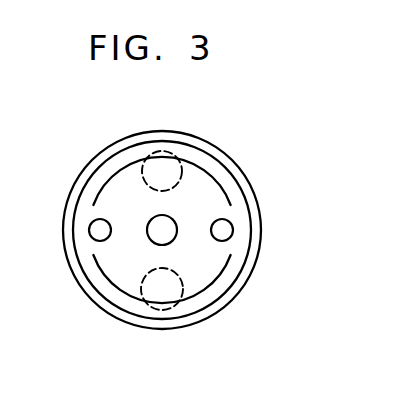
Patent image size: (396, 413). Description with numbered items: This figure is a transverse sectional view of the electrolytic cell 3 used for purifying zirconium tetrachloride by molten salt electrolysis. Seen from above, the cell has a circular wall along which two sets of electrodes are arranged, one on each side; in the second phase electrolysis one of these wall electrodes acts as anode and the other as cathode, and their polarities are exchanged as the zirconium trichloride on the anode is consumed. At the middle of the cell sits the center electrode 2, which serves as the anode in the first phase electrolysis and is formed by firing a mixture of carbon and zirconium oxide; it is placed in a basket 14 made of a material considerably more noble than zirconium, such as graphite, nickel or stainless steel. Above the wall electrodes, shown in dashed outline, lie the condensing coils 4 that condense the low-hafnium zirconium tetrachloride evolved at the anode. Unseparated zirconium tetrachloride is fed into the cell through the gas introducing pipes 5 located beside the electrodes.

The center electrode 2 is at (163, 231).
The electrolytic cell 3 is at (90, 278).
The condensing coil 4 is at (142, 173).
The gas introducing pipe 5 is at (88, 231).
The basket 14 is at (151, 219).